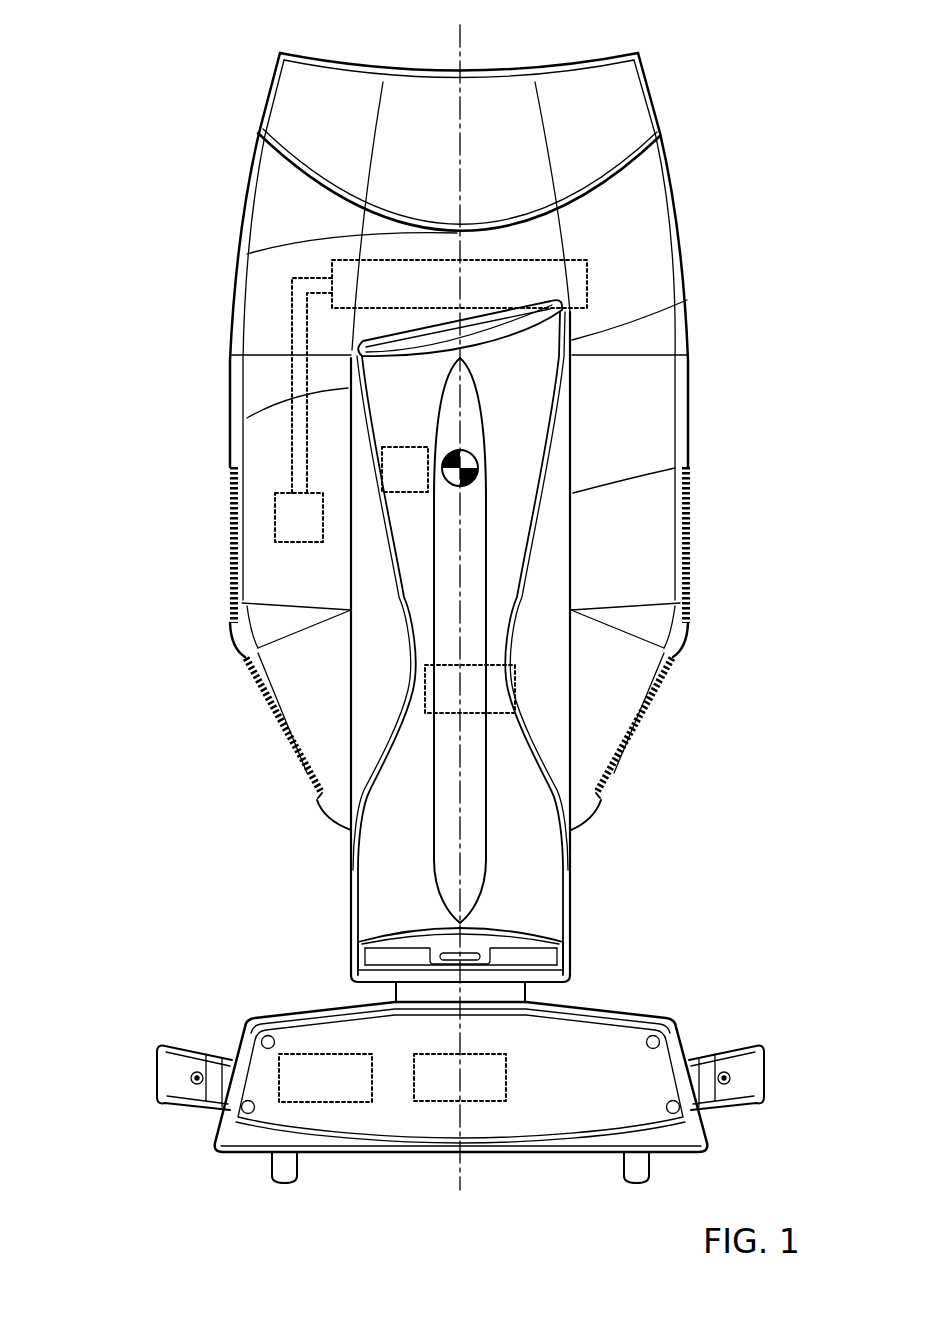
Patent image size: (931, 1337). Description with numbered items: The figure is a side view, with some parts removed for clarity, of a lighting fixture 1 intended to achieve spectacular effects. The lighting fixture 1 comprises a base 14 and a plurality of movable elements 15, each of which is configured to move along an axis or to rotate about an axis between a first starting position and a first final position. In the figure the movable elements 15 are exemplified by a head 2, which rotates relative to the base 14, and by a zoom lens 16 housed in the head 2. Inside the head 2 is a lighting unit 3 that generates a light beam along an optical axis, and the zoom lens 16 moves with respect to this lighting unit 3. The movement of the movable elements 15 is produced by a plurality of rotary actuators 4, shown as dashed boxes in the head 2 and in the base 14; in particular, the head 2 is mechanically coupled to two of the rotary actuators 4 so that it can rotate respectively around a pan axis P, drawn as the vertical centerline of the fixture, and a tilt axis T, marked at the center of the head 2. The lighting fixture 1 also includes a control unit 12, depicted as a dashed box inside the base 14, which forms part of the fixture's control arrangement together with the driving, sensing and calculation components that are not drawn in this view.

The lighting fixture 1 is at (165, 111).
The head 2 is at (280, 200).
The lighting unit 3 is at (505, 700).
The rotary actuator 4 is at (400, 493).
The control unit 12 is at (338, 1083).
The base 14 is at (632, 1044).
The movable element 15 is at (720, 199).
The zoom lens 16 is at (567, 280).
The tilt axis T is at (464, 457).
The pan axis P is at (462, 100).